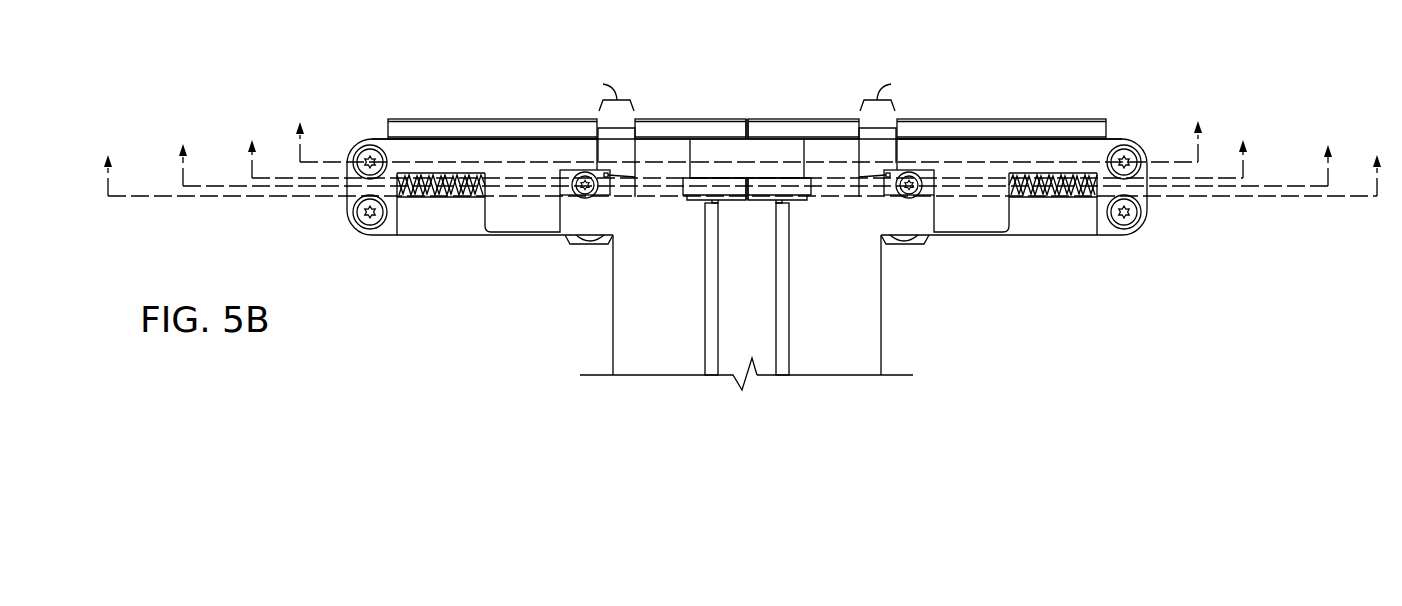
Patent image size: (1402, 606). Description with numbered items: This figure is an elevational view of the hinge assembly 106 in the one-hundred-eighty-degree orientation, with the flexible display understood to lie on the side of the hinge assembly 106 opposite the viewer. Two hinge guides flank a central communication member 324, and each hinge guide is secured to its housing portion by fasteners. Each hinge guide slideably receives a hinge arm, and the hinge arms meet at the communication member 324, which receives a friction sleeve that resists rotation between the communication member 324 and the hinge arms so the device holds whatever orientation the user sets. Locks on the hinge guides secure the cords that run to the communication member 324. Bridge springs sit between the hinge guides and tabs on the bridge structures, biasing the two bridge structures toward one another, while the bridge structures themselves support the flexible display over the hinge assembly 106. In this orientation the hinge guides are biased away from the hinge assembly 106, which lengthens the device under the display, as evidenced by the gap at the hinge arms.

The hinge assembly 106 is at (282, 68).
The communication member 324 is at (736, 119).